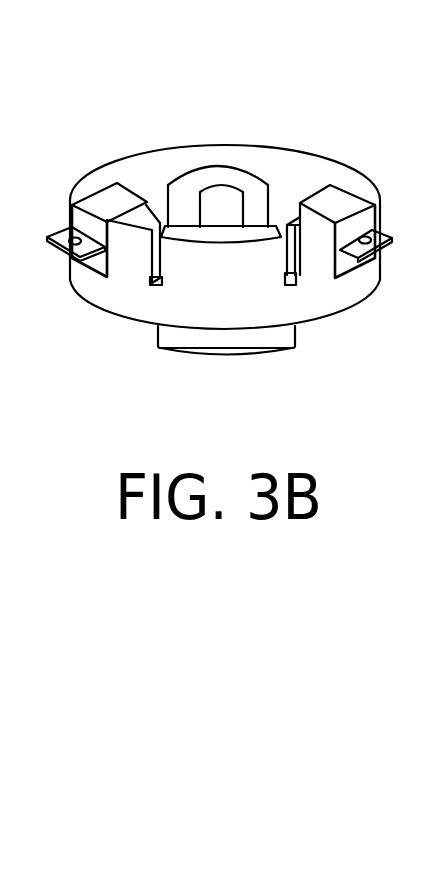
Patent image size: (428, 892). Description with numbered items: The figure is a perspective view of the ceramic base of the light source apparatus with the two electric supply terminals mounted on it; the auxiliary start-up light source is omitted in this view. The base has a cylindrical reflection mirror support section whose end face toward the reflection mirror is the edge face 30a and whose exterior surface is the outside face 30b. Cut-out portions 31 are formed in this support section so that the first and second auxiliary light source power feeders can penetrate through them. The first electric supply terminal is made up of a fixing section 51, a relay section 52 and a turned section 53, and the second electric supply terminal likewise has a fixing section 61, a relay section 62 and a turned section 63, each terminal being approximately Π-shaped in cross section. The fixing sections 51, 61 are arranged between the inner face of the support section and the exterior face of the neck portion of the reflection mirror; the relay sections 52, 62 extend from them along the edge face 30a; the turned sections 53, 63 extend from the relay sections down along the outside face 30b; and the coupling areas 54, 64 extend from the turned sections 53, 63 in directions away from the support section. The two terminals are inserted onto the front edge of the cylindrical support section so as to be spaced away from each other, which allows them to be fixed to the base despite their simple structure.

The edge face of the reflection mirror support section 30a is at (76, 190).
The outside face of the reflection mirror support section 30b is at (137, 297).
The cut-out portion 31 is at (152, 283).
The fixing section 51 is at (285, 205).
The relay section 52 is at (335, 198).
The turned section 53 is at (363, 216).
The coupling area 54 is at (390, 240).
The fixing section 61 is at (151, 193).
The relay section 62 is at (110, 190).
The turned section 63 is at (78, 222).
The coupling area 64 is at (48, 242).